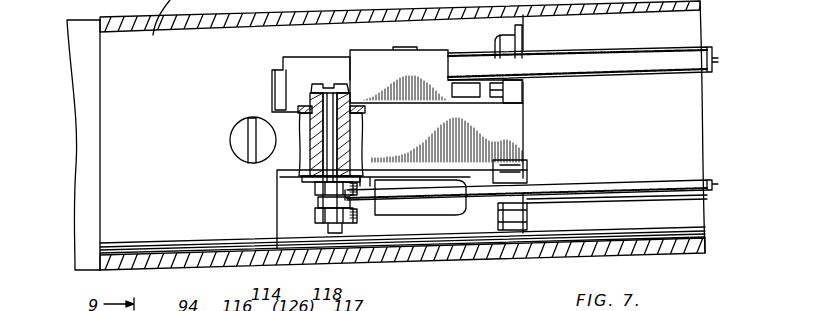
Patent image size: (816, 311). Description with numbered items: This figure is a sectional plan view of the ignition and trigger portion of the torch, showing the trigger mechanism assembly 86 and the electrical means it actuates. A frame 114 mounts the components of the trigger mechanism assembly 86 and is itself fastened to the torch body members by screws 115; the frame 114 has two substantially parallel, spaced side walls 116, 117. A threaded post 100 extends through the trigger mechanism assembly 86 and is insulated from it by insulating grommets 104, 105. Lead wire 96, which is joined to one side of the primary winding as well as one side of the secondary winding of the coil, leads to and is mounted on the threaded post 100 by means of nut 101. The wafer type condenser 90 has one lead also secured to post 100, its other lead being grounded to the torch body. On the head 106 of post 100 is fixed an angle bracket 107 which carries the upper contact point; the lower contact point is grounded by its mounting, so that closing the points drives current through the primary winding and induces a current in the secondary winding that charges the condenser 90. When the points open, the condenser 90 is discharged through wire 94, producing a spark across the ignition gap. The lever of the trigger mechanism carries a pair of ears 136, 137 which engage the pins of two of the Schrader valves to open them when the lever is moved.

The trigger mechanism assembly 86 is at (508, 137).
The condenser 90 is at (430, 215).
The wire 94 is at (678, 55).
The lead wire 96 is at (690, 182).
The threaded post 100 is at (344, 230).
The nut 101 is at (318, 209).
The insulating grommet 104 is at (314, 176).
The insulating grommet 105 is at (300, 95).
The head 106 is at (318, 75).
The angle bracket 107 is at (336, 83).
The frame 114 is at (296, 163).
The screw 115 is at (236, 140).
The side wall 116 is at (304, 107).
The side wall 117 is at (302, 180).
The ear 136 is at (510, 182).
The ear 137 is at (488, 88).